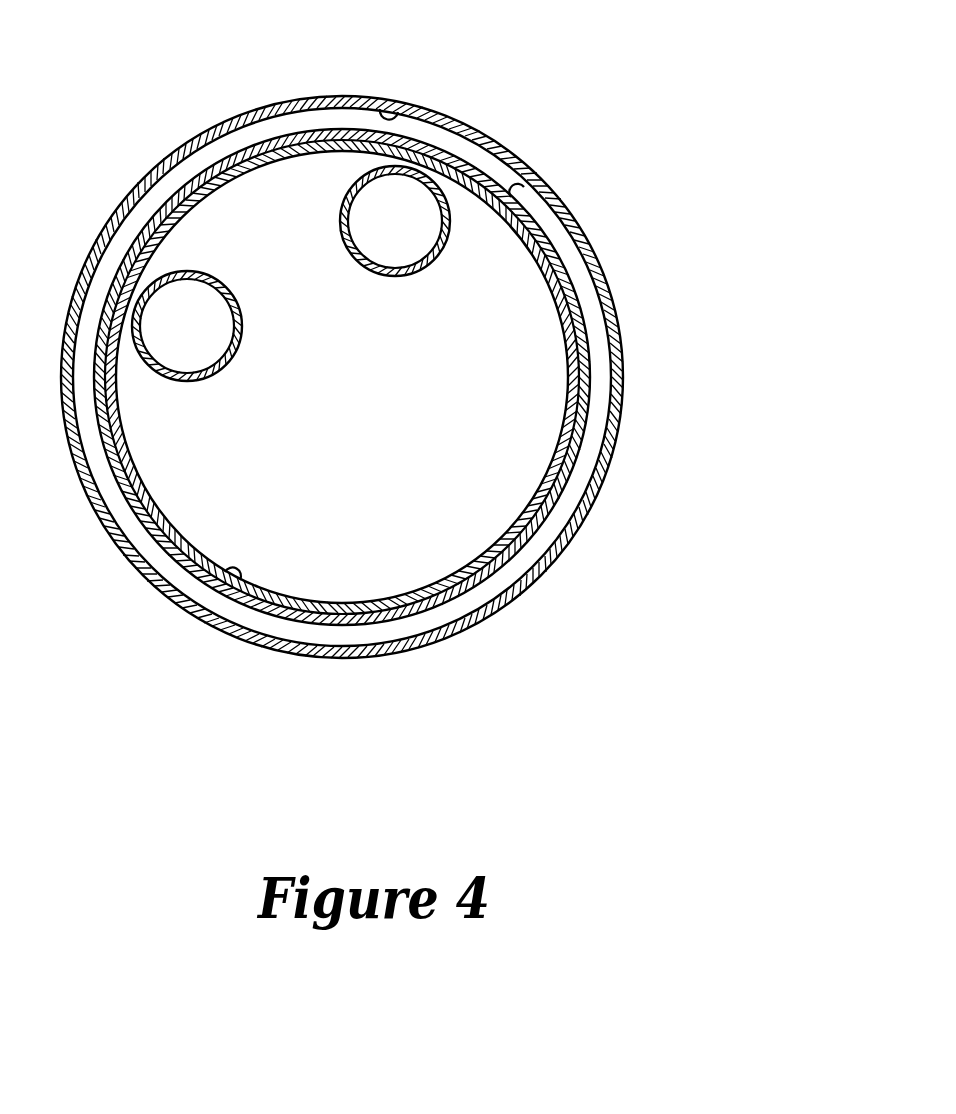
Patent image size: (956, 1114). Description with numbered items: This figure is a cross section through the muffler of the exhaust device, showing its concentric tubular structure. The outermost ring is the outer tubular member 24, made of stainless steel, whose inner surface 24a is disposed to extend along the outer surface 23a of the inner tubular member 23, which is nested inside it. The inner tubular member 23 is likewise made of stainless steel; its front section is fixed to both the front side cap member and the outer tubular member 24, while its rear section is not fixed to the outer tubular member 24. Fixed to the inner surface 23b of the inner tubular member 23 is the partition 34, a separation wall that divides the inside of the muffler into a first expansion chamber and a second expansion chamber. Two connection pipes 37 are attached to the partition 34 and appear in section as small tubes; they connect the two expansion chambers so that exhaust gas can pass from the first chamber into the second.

The outer tubular member 24 is at (592, 240).
The inner surface 24a is at (388, 118).
The inner tubular member 23 is at (563, 487).
The outer surface 23a is at (515, 203).
The inner surface 23b is at (238, 598).
The partition 34 is at (574, 405).
The connection pipes 37 is at (213, 270).